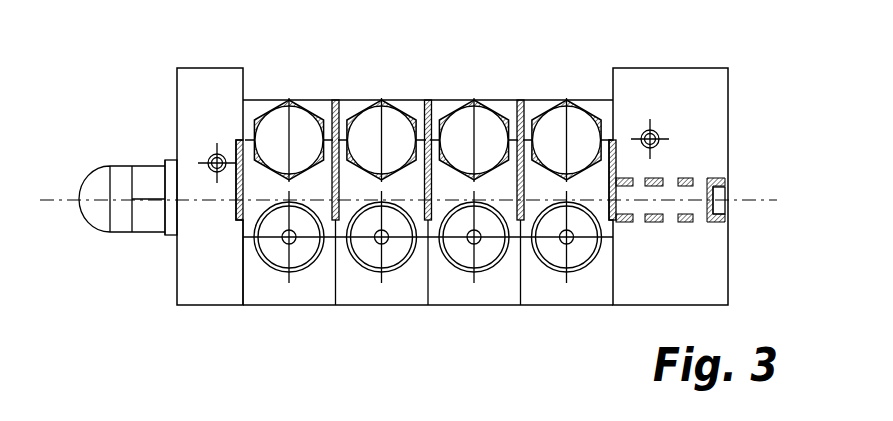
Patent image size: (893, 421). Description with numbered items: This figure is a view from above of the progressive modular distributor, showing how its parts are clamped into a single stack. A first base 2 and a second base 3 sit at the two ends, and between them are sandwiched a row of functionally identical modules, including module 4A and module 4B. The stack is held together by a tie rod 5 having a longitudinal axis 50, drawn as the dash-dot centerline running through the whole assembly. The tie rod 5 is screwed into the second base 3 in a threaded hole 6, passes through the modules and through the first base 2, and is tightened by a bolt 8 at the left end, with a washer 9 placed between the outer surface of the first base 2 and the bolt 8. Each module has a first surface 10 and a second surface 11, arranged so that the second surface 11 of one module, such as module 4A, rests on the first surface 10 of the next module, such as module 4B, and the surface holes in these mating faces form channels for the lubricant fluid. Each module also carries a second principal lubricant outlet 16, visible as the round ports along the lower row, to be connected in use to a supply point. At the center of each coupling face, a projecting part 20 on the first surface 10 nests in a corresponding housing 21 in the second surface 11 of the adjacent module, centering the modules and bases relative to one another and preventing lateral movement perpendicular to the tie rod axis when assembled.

The first base 2 is at (207, 90).
The second base 3 is at (690, 95).
The module 4A is at (290, 92).
The module 4B is at (382, 113).
The tie rod 5 is at (727, 187).
The threaded hole 6 is at (688, 227).
The bolt 8 is at (148, 218).
The washer 9 is at (168, 237).
The first surface 10 is at (243, 273).
The second surface 11 is at (322, 265).
The second principal lubricant outlet 16 is at (295, 257).
The projecting part 20 is at (347, 168).
The housing 21 is at (326, 170).
The longitudinal axis 50 is at (50, 199).